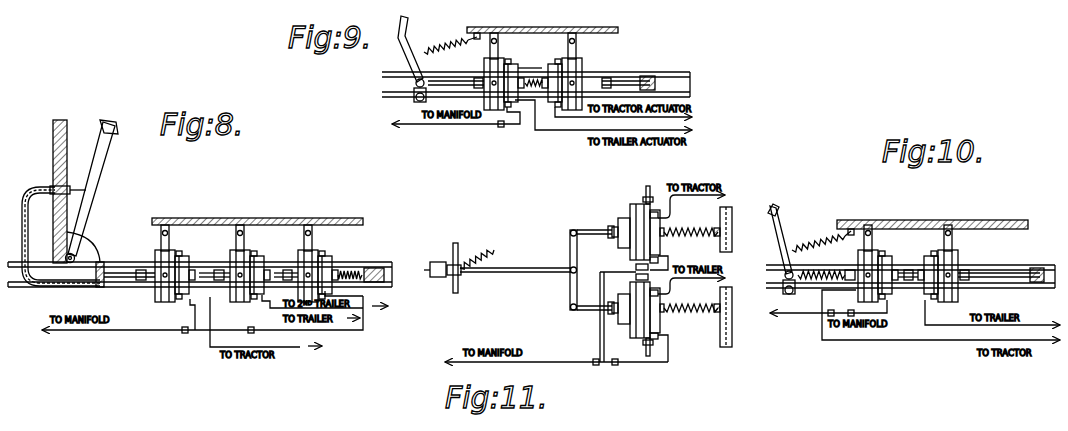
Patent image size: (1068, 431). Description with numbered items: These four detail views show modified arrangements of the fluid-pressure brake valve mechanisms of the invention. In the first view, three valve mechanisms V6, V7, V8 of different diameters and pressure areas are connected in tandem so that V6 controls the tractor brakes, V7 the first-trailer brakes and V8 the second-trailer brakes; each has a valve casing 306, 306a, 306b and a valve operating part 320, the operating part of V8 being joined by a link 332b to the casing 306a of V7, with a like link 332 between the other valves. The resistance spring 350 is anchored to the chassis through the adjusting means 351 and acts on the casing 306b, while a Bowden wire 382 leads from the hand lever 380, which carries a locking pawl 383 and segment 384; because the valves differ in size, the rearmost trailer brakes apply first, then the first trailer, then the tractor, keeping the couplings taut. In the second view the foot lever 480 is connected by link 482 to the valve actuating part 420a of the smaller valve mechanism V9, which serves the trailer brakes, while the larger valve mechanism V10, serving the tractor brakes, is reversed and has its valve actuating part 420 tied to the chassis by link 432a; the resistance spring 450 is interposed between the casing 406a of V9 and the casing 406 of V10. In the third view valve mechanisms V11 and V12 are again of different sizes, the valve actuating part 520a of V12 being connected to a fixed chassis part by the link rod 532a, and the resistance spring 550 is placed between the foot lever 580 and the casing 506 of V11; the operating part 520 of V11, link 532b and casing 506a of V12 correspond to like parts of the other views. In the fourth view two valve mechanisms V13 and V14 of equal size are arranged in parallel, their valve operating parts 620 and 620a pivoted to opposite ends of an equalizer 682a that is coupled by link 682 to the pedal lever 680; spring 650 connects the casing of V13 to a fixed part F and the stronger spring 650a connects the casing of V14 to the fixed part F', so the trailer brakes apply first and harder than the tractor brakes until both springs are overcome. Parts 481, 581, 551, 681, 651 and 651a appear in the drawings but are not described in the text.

In FIG. 8, the hand lever 380 is at (97, 160).
In FIG. 8, the locking pawl 383 is at (78, 236).
In FIG. 8, the segment 384 is at (84, 246).
In FIG. 8, the Bowden wire 382 is at (116, 272).
In FIG. 8, the valve operating part 320 is at (140, 282).
In FIG. 8, the valve casing 306 is at (178, 250).
In FIG. 8, the link 332 is at (206, 272).
In FIG. 8, the valve casing 306a is at (246, 254).
In FIG. 8, the link 332b is at (278, 272).
In FIG. 8, the valve casing 306b is at (316, 252).
In FIG. 8, the valve mechanism V6 is at (163, 304).
In FIG. 8, the valve mechanism V7 is at (236, 300).
In FIG. 8, the valve mechanism V8 is at (320, 256).
In FIG. 8, the resistance spring 350 is at (350, 271).
In FIG. 8, the adjusting means 351 is at (378, 267).
In FIG. 9, the foot lever 480 is at (410, 30).
In FIG. 9, the return spring 481 is at (466, 41).
In FIG. 9, the link 482 is at (440, 80).
In FIG. 9, the valve actuating part 420a is at (477, 78).
In FIG. 9, the valve casing 406a is at (496, 40).
In FIG. 9, the valve casing 406 is at (570, 38).
In FIG. 9, the resistance spring 450 is at (535, 80).
In FIG. 9, the valve actuating part 420 is at (596, 79).
In FIG. 9, the link 432a is at (638, 79).
In FIG. 9, the valve mechanism V9 is at (500, 108).
In FIG. 9, the valve mechanism V10 is at (570, 110).
In FIG. 10, the foot lever 580 is at (772, 210).
In FIG. 10, the return spring 581 is at (798, 243).
In FIG. 10, the resistance spring 550 is at (808, 288).
In FIG. 10, the valve casing 506 is at (860, 255).
In FIG. 10, the valve actuating part 520 is at (893, 272).
In FIG. 10, the link rod 532b is at (910, 280).
In FIG. 10, the valve mechanism V11 is at (857, 300).
In FIG. 10, the valve mechanism V12 is at (950, 300).
In FIG. 10, the valve casing 506a is at (956, 255).
In FIG. 10, the valve actuating part 520a is at (973, 272).
In FIG. 10, the abutment 551 is at (1040, 262).
In FIG. 10, the link rod 532a is at (978, 279).
In FIG. 11, the pedal lever 680 is at (440, 261).
In FIG. 11, the spring 681 is at (476, 258).
In FIG. 11, the link 682 is at (508, 273).
In FIG. 11, the equalizer 682a is at (570, 248).
In FIG. 11, the valve operating part 620 is at (588, 231).
In FIG. 11, the valve operating part 620a is at (592, 312).
In FIG. 11, the valve mechanism V13 is at (637, 213).
In FIG. 11, the valve mechanism V14 is at (635, 327).
In FIG. 11, the resistance spring 650 is at (693, 228).
In FIG. 11, the resistance spring 650a is at (690, 314).
In FIG. 11, the fixed part F is at (734, 228).
In FIG. 11, the fixed part F' is at (735, 317).
In FIG. 11, the spring seat 651 is at (724, 235).
In FIG. 11, the spring seat 651a is at (732, 325).